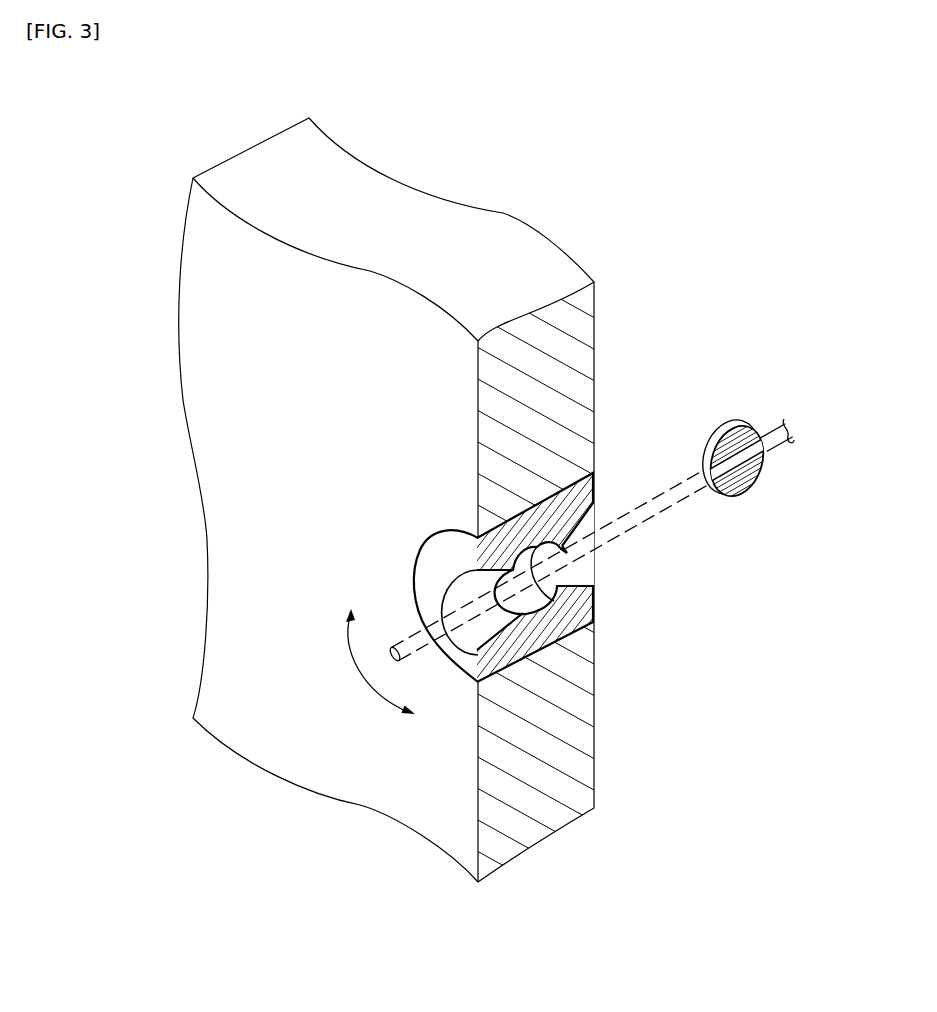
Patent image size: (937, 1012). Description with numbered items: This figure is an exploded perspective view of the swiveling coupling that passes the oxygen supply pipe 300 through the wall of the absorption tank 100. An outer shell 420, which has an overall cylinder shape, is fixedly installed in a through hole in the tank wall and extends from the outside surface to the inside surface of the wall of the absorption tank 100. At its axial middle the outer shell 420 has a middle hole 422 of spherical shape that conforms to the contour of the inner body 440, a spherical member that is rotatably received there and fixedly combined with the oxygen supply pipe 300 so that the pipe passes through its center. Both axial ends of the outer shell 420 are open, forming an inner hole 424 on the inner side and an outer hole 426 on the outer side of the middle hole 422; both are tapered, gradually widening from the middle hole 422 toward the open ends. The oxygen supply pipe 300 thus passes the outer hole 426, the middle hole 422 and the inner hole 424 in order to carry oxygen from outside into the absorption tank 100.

The absorption tank 100 is at (578, 382).
The oxygen supply pipe 300 is at (400, 630).
The outer shell 420 is at (580, 605).
The middle hole 422 is at (540, 597).
The inner hole 424 is at (463, 585).
The outer hole 426 is at (570, 565).
The inner body 440 is at (752, 487).